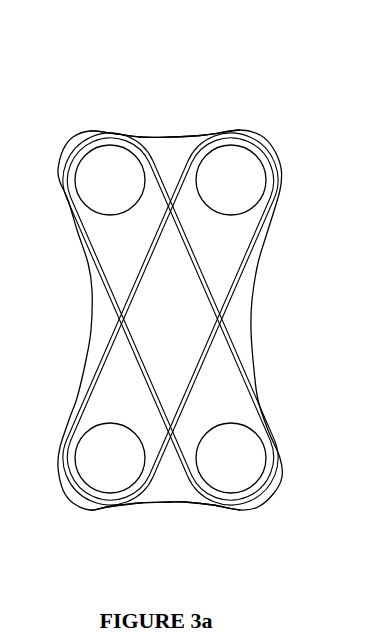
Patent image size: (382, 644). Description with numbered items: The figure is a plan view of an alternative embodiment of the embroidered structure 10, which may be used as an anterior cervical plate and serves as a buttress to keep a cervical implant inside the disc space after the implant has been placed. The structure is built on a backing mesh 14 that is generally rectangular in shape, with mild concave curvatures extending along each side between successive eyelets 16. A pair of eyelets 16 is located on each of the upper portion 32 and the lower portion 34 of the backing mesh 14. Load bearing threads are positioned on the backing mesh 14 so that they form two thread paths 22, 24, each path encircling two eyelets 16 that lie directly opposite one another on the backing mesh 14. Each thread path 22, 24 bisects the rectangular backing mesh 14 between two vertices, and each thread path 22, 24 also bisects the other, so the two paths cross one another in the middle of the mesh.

The embroidered structure 10 is at (192, 299).
The backing mesh 14 is at (253, 350).
The eyelets 16 is at (115, 162).
The thread path 22 is at (240, 265).
The thread path 24 is at (105, 283).
The upper portion 32 is at (170, 117).
The lower portion 34 is at (159, 512).